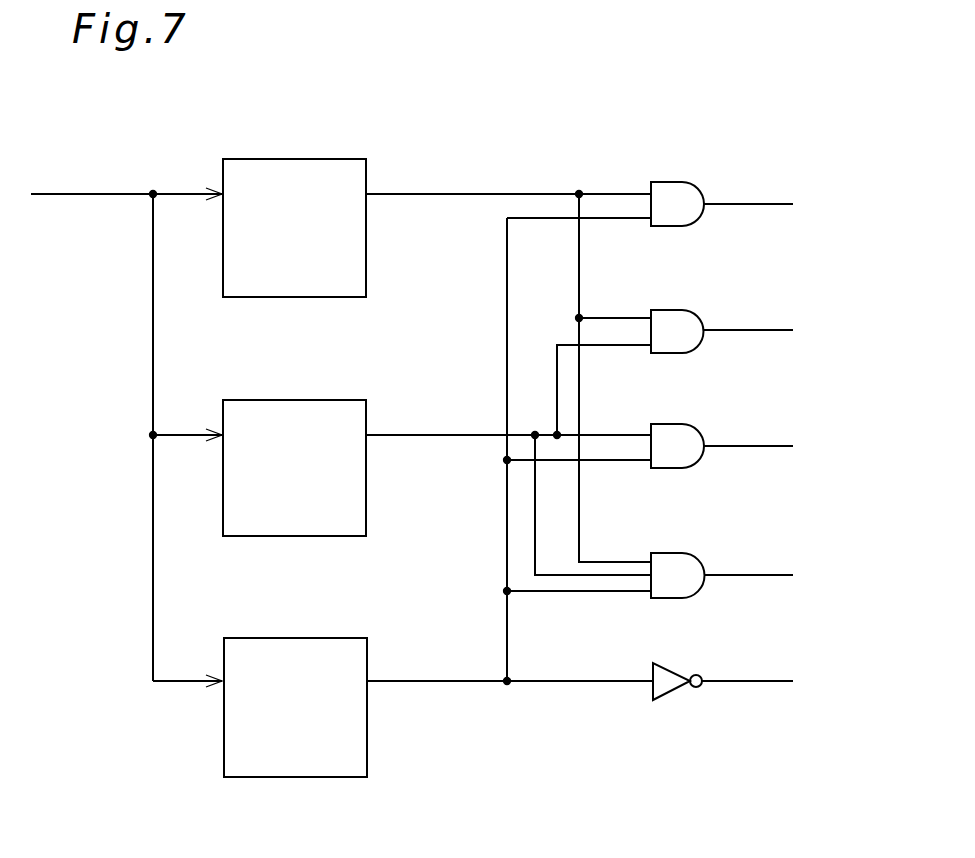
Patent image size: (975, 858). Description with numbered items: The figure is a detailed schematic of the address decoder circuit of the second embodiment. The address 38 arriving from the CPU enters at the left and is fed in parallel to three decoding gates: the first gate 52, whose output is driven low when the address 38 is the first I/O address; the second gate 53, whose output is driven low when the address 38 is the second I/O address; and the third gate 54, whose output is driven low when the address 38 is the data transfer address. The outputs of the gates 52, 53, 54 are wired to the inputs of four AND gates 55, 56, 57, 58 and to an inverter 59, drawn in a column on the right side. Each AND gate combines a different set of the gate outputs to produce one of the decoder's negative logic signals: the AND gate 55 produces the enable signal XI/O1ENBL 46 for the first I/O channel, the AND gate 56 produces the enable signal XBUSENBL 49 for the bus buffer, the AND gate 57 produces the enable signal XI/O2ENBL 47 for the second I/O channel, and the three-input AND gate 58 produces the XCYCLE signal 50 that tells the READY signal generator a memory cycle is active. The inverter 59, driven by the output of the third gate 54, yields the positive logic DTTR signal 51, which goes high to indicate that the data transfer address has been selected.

The address 38 is at (72, 194).
The first gate 52 is at (328, 159).
The second gate 53 is at (316, 400).
The third gate 54 is at (322, 638).
The AND gate 55 is at (681, 182).
The AND gate 56 is at (672, 310).
The AND gate 57 is at (672, 424).
The AND gate 58 is at (672, 553).
The inverter 59 is at (672, 672).
The enable signal XI/O1ENBL 46 is at (773, 204).
The enable signal XBUSENBL 49 is at (773, 330).
The enable signal XI/O2ENBL 47 is at (775, 446).
The XCYCLE signal 50 is at (775, 575).
The DTTR signal 51 is at (775, 681).